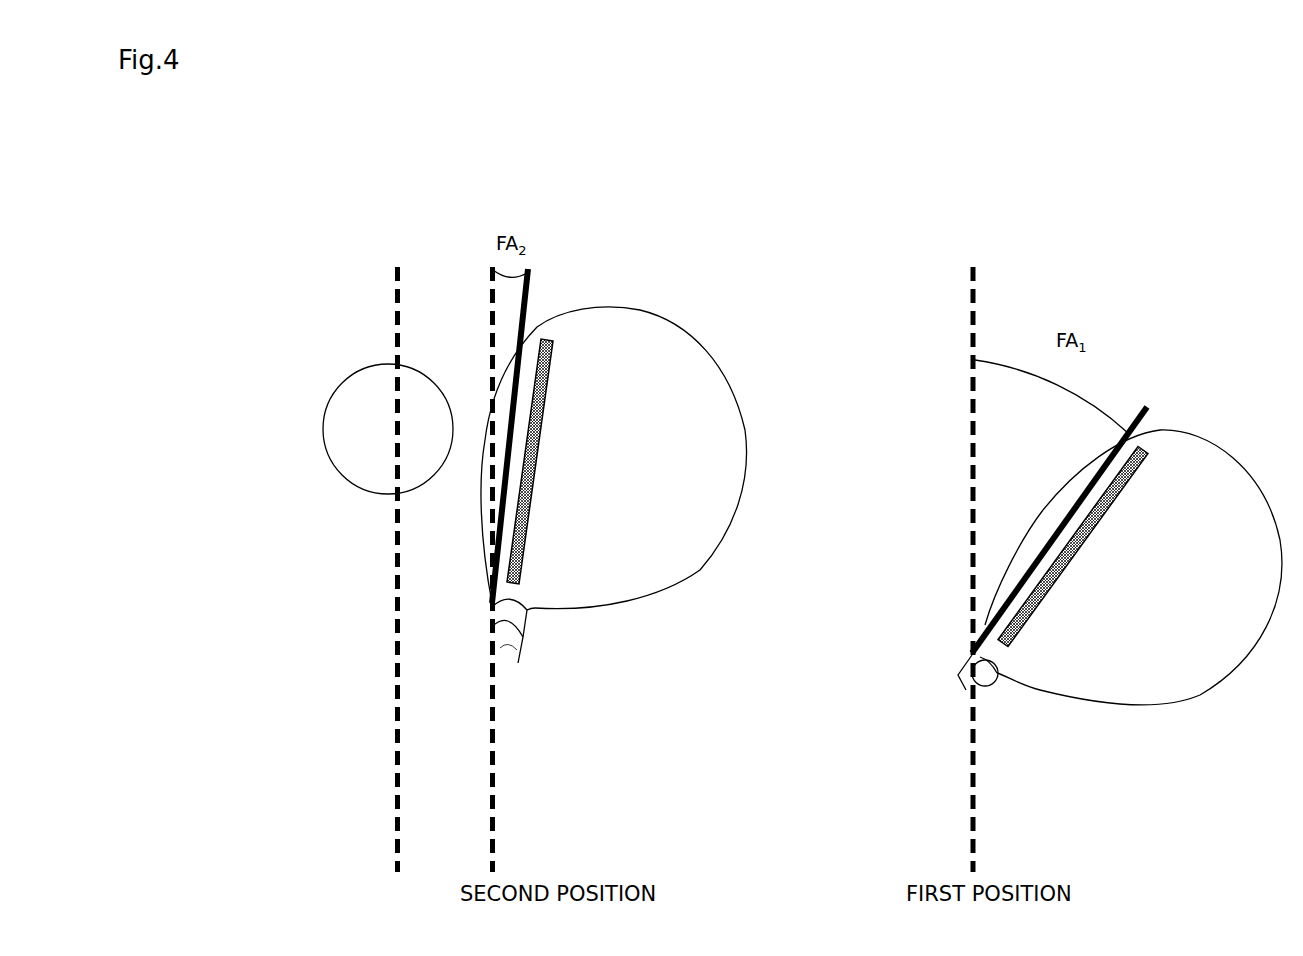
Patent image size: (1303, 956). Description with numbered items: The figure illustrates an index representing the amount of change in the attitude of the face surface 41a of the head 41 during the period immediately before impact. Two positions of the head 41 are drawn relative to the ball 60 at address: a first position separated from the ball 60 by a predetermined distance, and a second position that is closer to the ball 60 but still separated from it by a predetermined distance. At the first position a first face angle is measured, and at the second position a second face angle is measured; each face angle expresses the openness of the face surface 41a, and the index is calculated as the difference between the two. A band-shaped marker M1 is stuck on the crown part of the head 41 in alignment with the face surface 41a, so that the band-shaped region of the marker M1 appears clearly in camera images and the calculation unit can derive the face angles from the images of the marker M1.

The ball 60 is at (345, 410).
The head 41 is at (700, 335).
The face surface 41a is at (503, 413).
The marker M1 is at (537, 457).